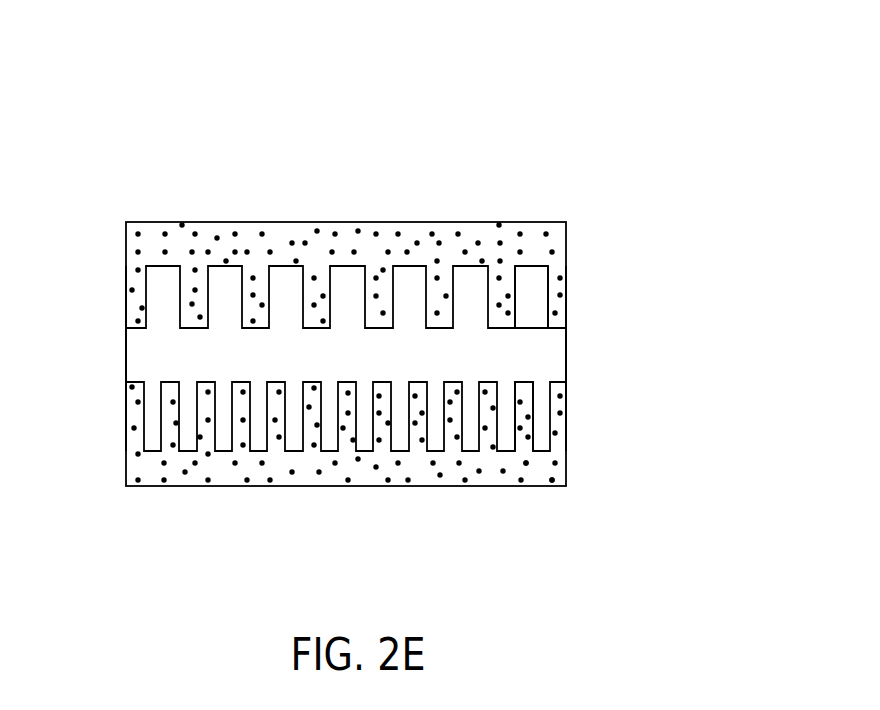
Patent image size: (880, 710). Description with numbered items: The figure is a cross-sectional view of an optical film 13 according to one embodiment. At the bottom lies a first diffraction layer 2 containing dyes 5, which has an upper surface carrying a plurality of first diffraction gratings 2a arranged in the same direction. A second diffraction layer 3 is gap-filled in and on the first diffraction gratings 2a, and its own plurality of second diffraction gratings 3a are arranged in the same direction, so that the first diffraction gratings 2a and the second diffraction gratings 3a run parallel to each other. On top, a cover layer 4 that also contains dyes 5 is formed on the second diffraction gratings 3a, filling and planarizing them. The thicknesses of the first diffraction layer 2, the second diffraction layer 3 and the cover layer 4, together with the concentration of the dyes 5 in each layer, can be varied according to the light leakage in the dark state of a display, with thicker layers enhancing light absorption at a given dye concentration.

The optical film 13 is at (48, 130).
The cover layer 4 is at (128, 240).
The second diffraction layer 3 is at (136, 362).
The first diffraction layer 2 is at (136, 465).
The second diffraction gratings 3a is at (532, 302).
The first diffraction gratings 2a is at (527, 410).
The dyes 5 is at (557, 463).